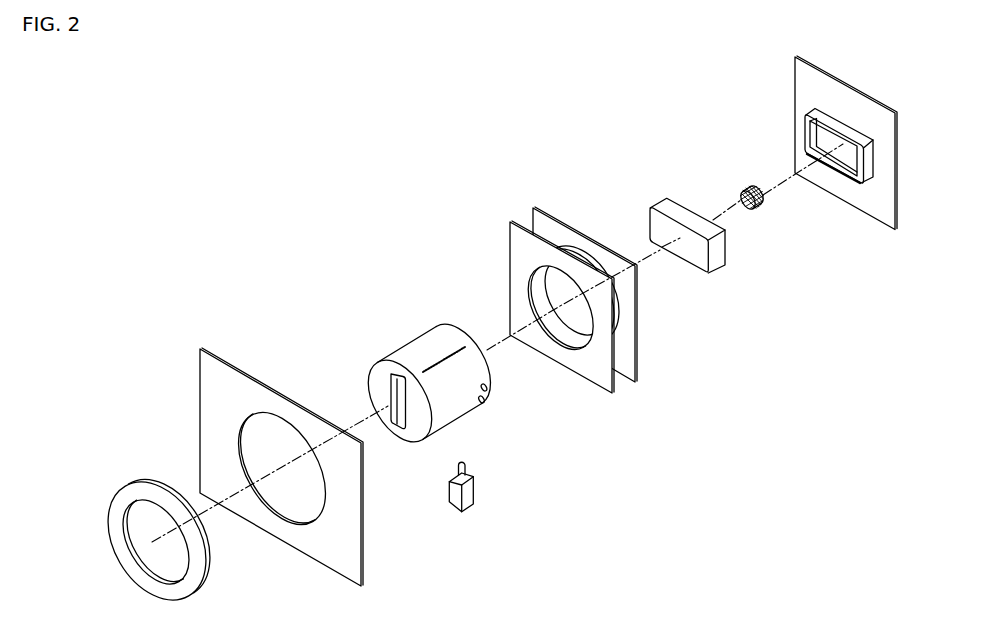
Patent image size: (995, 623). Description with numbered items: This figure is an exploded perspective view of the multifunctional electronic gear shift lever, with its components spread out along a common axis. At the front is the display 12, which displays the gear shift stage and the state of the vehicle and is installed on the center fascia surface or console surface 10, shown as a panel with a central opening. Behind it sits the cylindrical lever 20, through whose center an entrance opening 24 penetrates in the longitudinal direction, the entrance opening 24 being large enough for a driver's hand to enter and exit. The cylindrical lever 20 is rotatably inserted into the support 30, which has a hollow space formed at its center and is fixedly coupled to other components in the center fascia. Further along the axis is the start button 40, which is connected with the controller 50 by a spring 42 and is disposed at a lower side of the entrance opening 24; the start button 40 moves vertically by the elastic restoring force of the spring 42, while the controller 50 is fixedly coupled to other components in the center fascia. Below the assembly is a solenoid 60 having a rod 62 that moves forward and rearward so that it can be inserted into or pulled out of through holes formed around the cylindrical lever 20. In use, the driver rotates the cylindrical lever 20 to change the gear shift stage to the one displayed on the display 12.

The console surface 10 is at (235, 388).
The display 12 is at (133, 495).
The cylindrical lever 20 is at (420, 347).
The entrance opening 24 is at (396, 392).
The support 30 is at (525, 247).
The start button 40 is at (672, 210).
The spring 42 is at (750, 188).
The controller 50 is at (810, 83).
The solenoid 60 is at (470, 493).
The rod 62 is at (467, 465).